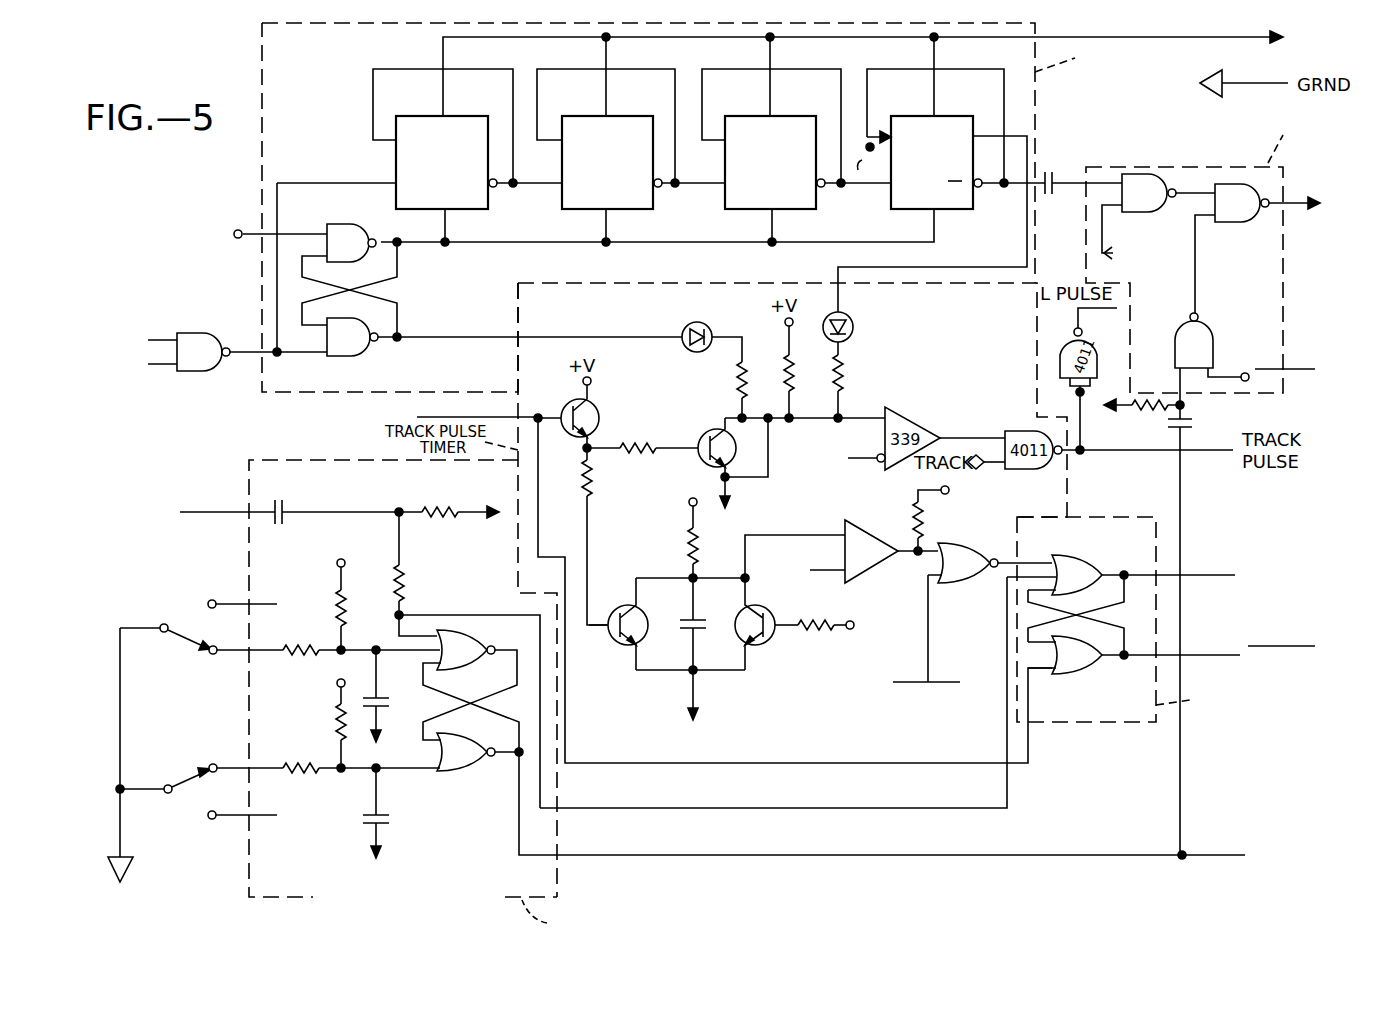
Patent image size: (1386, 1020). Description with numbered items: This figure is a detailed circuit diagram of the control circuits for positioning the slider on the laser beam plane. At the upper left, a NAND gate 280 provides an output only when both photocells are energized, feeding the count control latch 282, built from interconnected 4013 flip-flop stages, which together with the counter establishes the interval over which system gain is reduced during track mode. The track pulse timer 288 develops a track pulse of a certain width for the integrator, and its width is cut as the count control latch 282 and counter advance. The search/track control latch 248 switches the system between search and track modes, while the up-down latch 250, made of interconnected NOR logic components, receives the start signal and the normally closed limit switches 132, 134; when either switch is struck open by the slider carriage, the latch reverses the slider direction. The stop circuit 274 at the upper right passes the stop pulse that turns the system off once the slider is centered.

The count control latch 282 is at (1037, 98).
The NAND gate 280 is at (192, 335).
The stop circuit 274 is at (1180, 160).
The track pulse timer 288 is at (672, 523).
The search/track control latch 248 is at (1074, 733).
The up-down control latch 250 is at (557, 885).
The limit switch 132 is at (243, 637).
The limit switch 134 is at (243, 802).